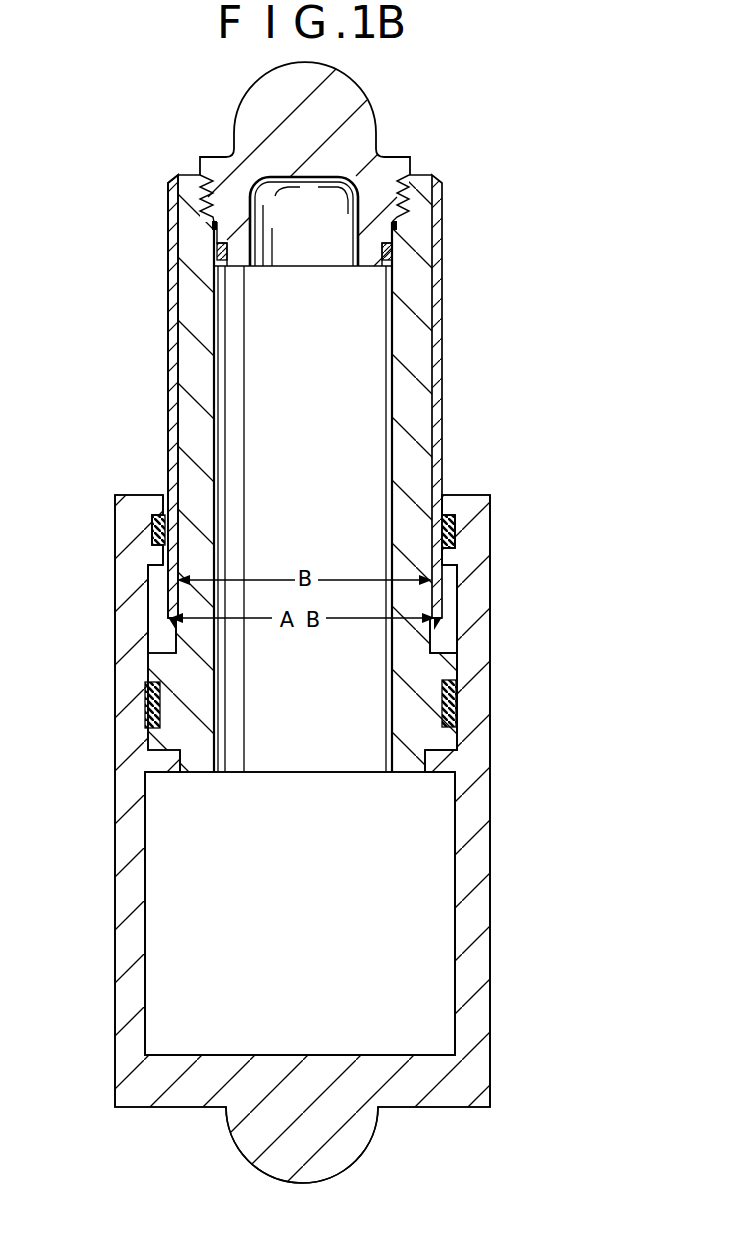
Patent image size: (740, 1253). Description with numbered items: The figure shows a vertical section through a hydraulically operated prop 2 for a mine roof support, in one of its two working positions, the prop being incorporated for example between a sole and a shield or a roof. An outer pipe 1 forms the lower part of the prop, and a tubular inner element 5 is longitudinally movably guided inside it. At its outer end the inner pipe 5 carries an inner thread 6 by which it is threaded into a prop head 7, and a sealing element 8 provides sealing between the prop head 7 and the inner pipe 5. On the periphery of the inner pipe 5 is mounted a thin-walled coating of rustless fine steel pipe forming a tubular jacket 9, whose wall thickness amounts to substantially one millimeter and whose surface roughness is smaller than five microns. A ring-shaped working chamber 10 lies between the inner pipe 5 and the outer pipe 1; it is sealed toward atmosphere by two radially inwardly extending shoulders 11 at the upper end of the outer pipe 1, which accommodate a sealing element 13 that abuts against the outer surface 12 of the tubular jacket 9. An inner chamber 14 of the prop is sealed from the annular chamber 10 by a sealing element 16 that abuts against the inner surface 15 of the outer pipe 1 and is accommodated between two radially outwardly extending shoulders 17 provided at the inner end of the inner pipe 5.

The outer pipe 1 is at (472, 928).
The prop 2 is at (108, 835).
The tubular inner element 5 is at (414, 462).
The inner thread 6 is at (389, 198).
The prop head 7 is at (250, 122).
The sealing element 8 is at (233, 250).
The tubular jacket 9 is at (437, 312).
The ring-shaped working chamber 10 is at (450, 610).
The radially inwardly extending shoulders 11 is at (155, 503).
The outer surface 12 is at (168, 360).
The sealing element 13 is at (458, 527).
The inner chamber 14 is at (322, 876).
The inner surface 15 is at (148, 1000).
The sealing element 16 is at (145, 683).
The radially outwardly extending shoulders 17 is at (442, 665).